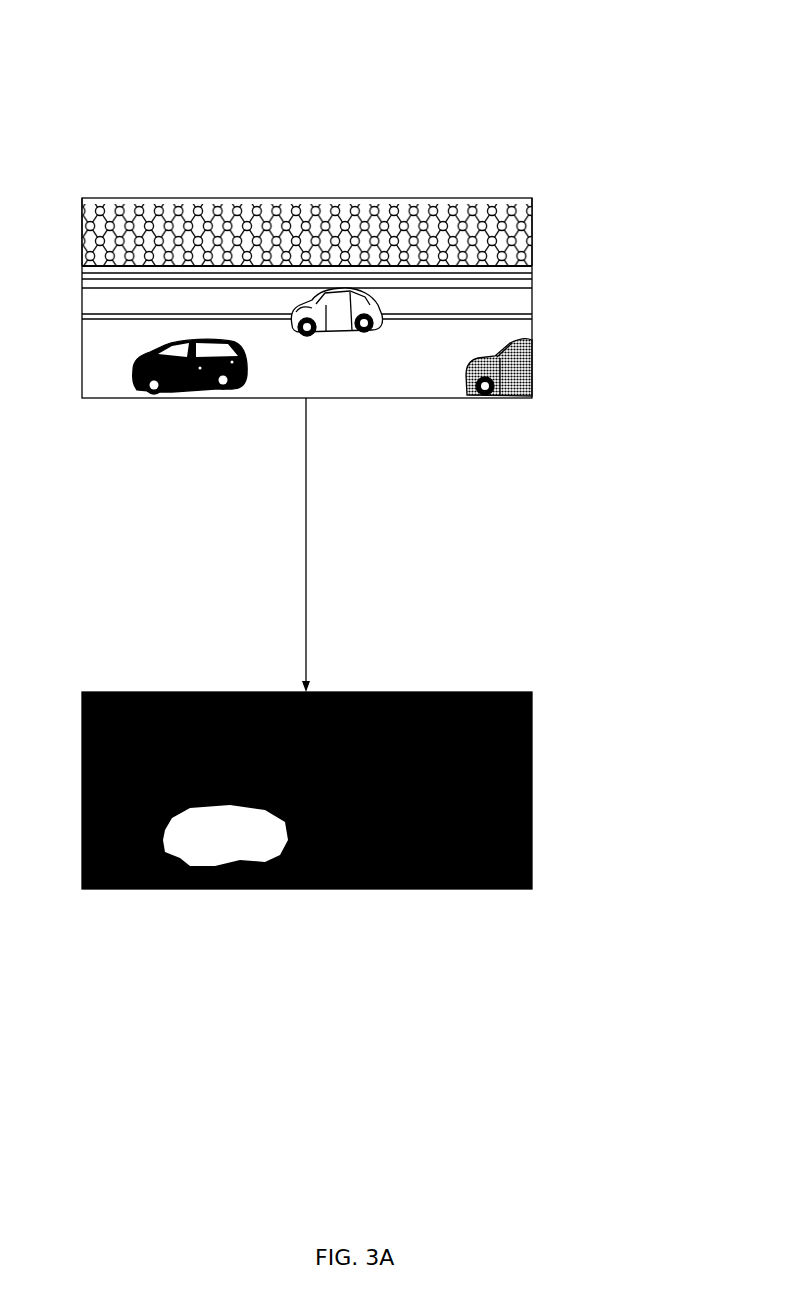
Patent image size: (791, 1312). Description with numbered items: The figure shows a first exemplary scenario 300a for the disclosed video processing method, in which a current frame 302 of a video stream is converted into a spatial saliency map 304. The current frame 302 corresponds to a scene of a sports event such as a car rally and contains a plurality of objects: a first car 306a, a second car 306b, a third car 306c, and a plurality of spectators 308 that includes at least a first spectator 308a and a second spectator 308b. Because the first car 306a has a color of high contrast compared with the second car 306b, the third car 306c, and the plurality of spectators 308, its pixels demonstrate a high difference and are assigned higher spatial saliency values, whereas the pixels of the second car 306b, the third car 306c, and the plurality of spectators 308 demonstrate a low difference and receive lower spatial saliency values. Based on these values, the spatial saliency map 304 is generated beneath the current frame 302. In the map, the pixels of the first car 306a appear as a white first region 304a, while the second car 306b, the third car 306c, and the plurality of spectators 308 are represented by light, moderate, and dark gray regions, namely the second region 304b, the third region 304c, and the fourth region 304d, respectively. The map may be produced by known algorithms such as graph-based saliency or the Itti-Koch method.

The first exemplary scenario 300a is at (628, 60).
The current frame 302 is at (507, 182).
The spatial saliency map 304 is at (143, 694).
The first region 304a is at (225, 835).
The second region 304b is at (372, 796).
The third region 304c is at (517, 865).
The fourth region 304d is at (202, 708).
The first car 306a is at (148, 357).
The second car 306b is at (352, 304).
The third car 306c is at (527, 345).
The plurality of spectators 308 is at (160, 218).
The first spectator 308a is at (524, 228).
The second spectator 308b is at (90, 230).